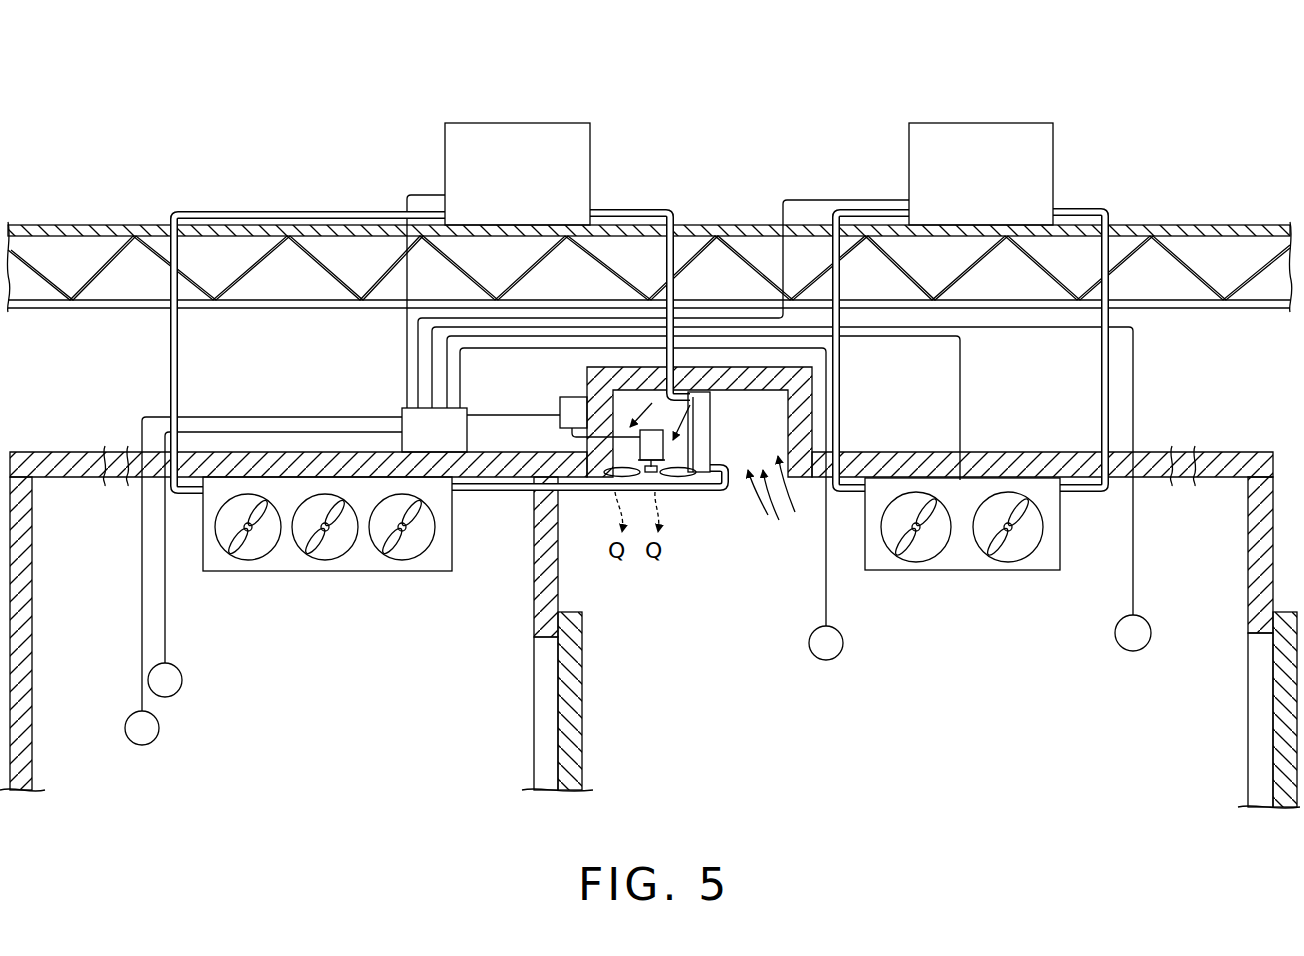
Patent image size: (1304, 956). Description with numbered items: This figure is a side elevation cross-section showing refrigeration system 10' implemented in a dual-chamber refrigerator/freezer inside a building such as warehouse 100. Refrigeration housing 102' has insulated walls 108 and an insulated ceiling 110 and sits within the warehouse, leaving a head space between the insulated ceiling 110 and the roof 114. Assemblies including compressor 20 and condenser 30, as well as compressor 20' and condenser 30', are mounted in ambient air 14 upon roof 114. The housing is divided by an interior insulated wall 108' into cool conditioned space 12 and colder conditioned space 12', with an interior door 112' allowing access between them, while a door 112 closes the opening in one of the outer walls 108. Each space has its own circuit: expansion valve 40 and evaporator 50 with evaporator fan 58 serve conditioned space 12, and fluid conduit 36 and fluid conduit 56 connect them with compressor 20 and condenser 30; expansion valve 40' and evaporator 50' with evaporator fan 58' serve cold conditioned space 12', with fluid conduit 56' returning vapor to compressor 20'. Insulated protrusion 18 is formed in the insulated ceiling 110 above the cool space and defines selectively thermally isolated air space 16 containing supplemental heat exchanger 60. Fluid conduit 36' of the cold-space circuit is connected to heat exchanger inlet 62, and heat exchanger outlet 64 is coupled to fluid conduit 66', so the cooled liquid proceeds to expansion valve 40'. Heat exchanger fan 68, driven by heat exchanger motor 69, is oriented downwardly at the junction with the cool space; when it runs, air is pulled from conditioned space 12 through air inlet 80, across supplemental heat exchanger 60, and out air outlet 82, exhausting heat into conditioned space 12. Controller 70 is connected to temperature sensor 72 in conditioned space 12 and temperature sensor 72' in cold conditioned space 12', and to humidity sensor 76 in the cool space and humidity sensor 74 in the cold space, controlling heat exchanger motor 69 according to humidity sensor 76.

The warehouse 100 is at (57, 162).
The roof 114 is at (105, 226).
The compressor 20' is at (456, 161).
The condenser 30' is at (456, 161).
The refrigeration system 10' is at (643, 131).
The ambient air 14 is at (808, 139).
The fluid conduit 36' is at (662, 289).
The compressor 20 is at (1027, 161).
The condenser 30 is at (1027, 161).
The refrigeration housing 102' is at (641, 419).
The insulated ceiling 110 is at (87, 452).
The fluid conduit 56' is at (309, 352).
The controller 70 is at (404, 406).
The insulated protrusion 18 is at (588, 382).
The heat exchanger inlet 62 is at (686, 390).
The fluid conduit 36 is at (872, 350).
The fluid conduit 56 is at (1060, 350).
The selectively thermally isolated air space 16 is at (773, 432).
The supplemental heat exchanger 60 is at (705, 408).
The heat exchanger outlet 64 is at (716, 470).
The insulated walls 108 is at (650, 608).
The heat exchanger motor 69 is at (640, 447).
The fluid conduit 66' is at (604, 482).
The heat exchanger fan 68 is at (622, 480).
The air outlet 82 is at (679, 482).
The air inlet 80 is at (774, 501).
The evaporator fan 58 is at (996, 552).
The evaporator fan 58' is at (342, 555).
The expansion valve 40 is at (988, 545).
The evaporator 50 is at (988, 545).
The expansion valve 40' is at (336, 547).
The evaporator 50' is at (336, 547).
The interior insulated wall 108' is at (524, 634).
The interior door 112' is at (610, 701).
The cold conditioned space 12' is at (335, 683).
The conditioned space 12 is at (977, 669).
The temperature sensor 72 is at (806, 661).
The temperature sensor 72' is at (174, 734).
The humidity sensor 74 is at (183, 681).
The humidity sensor 76 is at (1122, 645).
The door 112 is at (1234, 709).